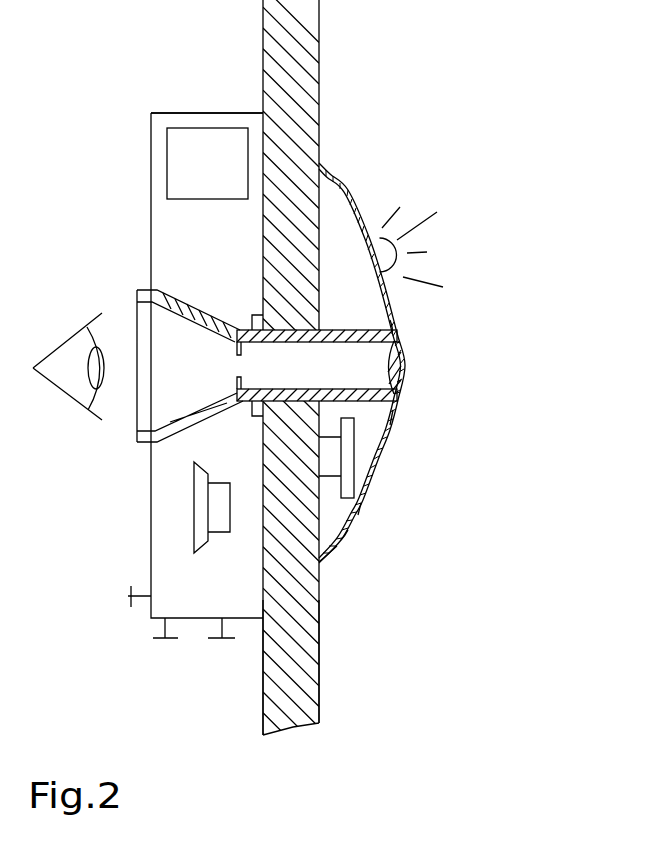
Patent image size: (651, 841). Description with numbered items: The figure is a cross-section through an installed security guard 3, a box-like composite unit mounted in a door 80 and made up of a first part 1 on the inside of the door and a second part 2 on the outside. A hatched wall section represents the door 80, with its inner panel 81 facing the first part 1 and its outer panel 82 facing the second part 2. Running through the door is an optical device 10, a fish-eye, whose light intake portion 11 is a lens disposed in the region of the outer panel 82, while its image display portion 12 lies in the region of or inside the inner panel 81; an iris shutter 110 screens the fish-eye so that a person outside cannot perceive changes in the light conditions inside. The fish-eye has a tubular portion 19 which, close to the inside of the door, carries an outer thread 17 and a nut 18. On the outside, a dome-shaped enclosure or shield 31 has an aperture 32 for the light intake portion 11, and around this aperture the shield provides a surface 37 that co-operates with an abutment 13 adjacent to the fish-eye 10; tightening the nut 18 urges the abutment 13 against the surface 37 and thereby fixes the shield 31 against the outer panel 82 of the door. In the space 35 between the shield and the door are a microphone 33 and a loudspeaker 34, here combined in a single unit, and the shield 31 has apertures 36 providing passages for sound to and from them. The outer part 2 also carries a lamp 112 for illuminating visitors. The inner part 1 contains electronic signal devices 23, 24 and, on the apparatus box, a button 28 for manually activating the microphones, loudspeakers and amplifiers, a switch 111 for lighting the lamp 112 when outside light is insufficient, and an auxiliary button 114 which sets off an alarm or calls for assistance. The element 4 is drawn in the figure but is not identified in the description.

The first part 1 is at (248, 613).
The second part 2 is at (337, 533).
The security guard 3 is at (250, 212).
The electronics module 4 is at (170, 152).
The optical device 10 is at (177, 322).
The light intake portion 11 is at (403, 358).
The image display portion 12 is at (200, 423).
The abutment 13 is at (393, 422).
The outer thread 17 is at (255, 343).
The nut 18 is at (253, 318).
The tubular portion 19 is at (263, 282).
The signal device 23 is at (193, 540).
The signal device 24 is at (193, 490).
The button 28 is at (128, 597).
The dome-shaped enclosure 31 is at (358, 210).
The aperture 32 is at (400, 385).
The microphone 33 is at (358, 510).
The loudspeaker 34 is at (350, 445).
The space 35 is at (348, 527).
The apertures 36 is at (373, 483).
The surface 37 is at (397, 307).
The door 80 is at (303, 683).
The inner panel 81 is at (263, 726).
The outer panel 82 is at (322, 724).
The iris shutter 110 is at (237, 380).
The switch 111 is at (158, 639).
The lamp 112 is at (397, 265).
The auxiliary button 114 is at (215, 640).